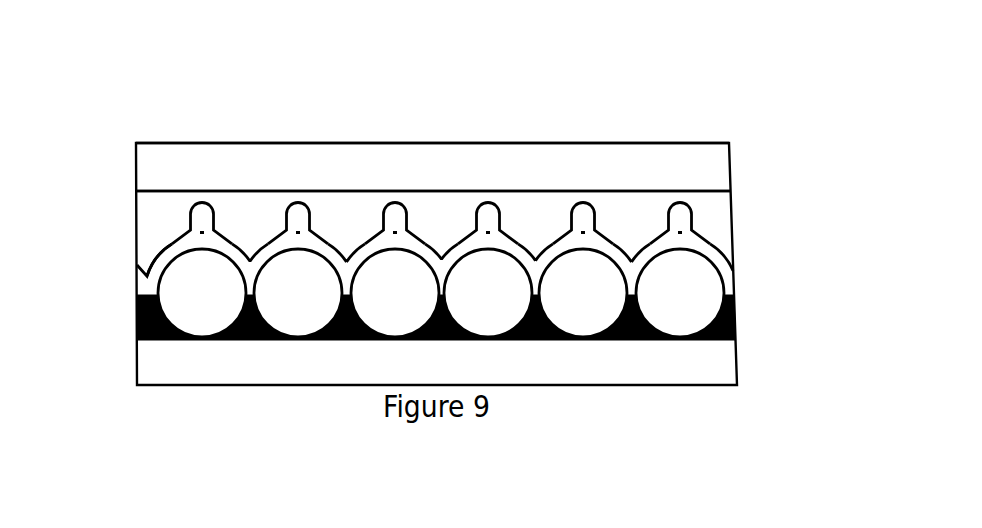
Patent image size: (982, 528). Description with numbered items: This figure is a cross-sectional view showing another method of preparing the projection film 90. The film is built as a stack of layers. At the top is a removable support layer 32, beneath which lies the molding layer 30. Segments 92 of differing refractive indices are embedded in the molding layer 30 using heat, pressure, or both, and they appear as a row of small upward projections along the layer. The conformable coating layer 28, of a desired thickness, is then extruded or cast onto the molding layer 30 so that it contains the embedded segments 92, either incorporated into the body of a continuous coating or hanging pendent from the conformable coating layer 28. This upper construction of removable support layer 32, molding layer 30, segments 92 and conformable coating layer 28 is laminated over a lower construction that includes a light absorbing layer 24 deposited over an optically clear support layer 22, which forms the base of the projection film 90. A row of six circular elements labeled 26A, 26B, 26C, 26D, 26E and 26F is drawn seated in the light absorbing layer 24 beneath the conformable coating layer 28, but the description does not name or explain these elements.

The projection film 90 is at (459, 136).
The segments 92 is at (387, 202).
The removable support layer 32 is at (210, 176).
The molding layer 30 is at (168, 208).
The conformable coating layer 28 is at (143, 273).
The light absorbing layer 24 is at (138, 330).
The optically clear support layer 22 is at (200, 358).
The ink channel 26A is at (202, 293).
The ink channel 26B is at (298, 293).
The ink channel 26C is at (395, 293).
The ink channel 26D is at (488, 293).
The ink channel 26E is at (583, 293).
The ink channel 26F is at (680, 293).